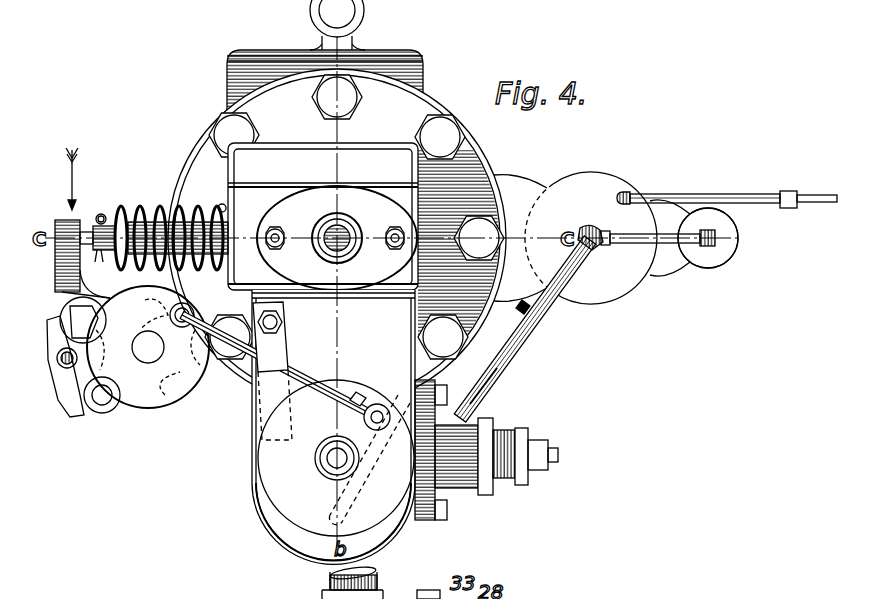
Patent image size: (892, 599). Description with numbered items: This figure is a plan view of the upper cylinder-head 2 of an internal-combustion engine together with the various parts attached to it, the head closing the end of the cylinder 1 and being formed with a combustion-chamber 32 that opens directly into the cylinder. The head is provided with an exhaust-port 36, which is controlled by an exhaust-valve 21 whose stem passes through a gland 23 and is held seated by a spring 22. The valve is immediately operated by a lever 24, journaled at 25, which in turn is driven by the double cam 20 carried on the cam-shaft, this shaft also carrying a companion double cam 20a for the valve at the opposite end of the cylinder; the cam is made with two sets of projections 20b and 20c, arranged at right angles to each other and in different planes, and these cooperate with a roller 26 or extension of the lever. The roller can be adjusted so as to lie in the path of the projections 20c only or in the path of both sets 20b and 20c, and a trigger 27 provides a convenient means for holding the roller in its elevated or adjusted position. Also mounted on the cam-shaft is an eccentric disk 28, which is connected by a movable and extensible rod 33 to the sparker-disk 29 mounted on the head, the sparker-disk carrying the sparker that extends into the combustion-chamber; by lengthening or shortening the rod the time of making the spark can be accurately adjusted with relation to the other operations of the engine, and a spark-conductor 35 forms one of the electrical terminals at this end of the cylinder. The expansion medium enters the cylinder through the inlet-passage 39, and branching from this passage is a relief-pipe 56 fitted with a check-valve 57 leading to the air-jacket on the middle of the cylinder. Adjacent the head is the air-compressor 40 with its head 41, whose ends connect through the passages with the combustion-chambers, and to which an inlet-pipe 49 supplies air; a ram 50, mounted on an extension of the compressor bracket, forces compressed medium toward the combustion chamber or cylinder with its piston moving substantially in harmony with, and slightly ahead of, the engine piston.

The cylinder 1 is at (481, 160).
The cylinder-head 2 is at (187, 180).
The double cam 20 is at (170, 373).
The double cam 20a is at (193, 346).
The cam projection 20b is at (120, 341).
The cam projection 20c is at (153, 343).
The exhaust-valve 21 is at (94, 207).
The spring 22 is at (190, 207).
The gland 23 is at (214, 205).
The lever 24 is at (62, 290).
The journal 25 is at (83, 320).
The roller 26 is at (110, 408).
The trigger 27 is at (67, 385).
The eccentric disk 28 is at (170, 397).
The sparker-disk 29 is at (336, 458).
The combustion-chamber 32 is at (375, 535).
The extensible rod 33 is at (292, 372).
The spark-conductor 35 is at (283, 340).
The exhaust-port 36 is at (362, 18).
The inlet-passage 39 is at (482, 375).
The air-compressor 40 is at (584, 188).
The compressor head 41 is at (640, 292).
The inlet-pipe 49 is at (737, 198).
The ram 50 is at (733, 246).
The relief-pipe 56 is at (490, 350).
The check-valve 57 is at (532, 313).